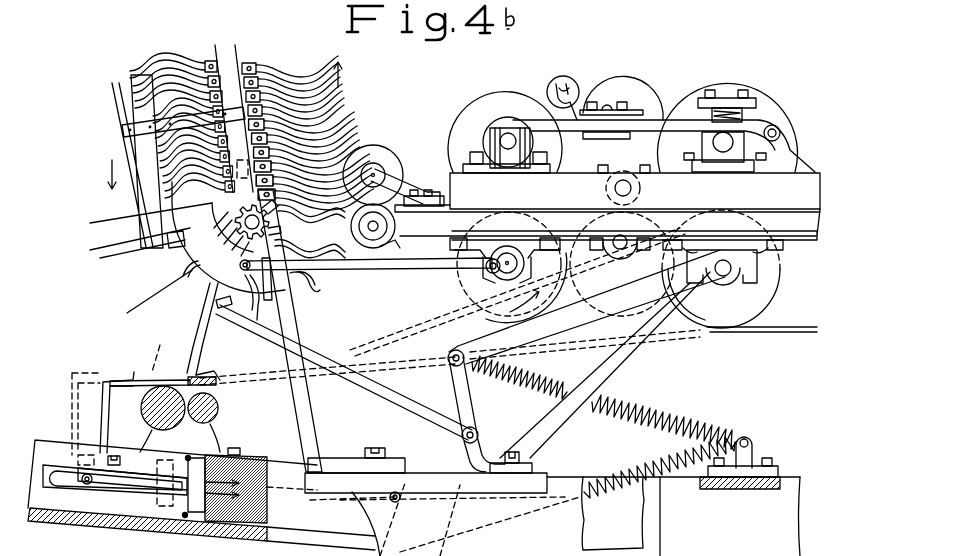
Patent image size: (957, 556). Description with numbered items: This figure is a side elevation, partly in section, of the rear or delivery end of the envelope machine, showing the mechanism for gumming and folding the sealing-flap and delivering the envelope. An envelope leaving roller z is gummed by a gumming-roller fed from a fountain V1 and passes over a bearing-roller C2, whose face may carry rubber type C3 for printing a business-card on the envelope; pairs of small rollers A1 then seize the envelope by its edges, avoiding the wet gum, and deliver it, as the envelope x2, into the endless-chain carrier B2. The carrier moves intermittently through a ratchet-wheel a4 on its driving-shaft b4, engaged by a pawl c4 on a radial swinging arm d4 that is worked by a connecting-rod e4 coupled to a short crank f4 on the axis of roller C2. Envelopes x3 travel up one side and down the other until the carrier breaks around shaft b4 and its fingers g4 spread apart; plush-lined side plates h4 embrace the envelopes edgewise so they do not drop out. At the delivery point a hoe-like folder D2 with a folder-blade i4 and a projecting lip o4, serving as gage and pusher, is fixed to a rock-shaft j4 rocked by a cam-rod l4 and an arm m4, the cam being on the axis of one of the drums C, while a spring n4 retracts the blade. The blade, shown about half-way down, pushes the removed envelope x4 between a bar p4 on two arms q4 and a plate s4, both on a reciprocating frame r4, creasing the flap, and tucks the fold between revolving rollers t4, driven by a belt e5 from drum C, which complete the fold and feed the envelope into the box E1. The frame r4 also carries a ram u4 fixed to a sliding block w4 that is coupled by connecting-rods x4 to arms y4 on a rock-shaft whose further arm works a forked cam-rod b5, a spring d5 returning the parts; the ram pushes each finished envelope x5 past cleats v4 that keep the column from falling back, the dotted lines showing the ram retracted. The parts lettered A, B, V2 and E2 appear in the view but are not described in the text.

The endless-chain carrier B2 is at (252, 118).
The fingers g4 is at (251, 172).
The frame A is at (607, 201).
The wheel V2 is at (530, 92).
The gum fountain V1 is at (605, 92).
The roller z is at (777, 126).
The bearing-roller C2 is at (511, 267).
The short crank f4 is at (512, 256).
The rubber type C3 is at (622, 243).
The drum C is at (721, 269).
The rail B is at (762, 321).
The small rollers A1 is at (393, 171).
The envelope x2 is at (369, 224).
The connecting-rod e4 is at (369, 266).
The side plates h4 is at (239, 269).
The radial swinging arm d4 is at (228, 237).
The ratchet-wheel a4 is at (234, 222).
The driving-shaft b4 is at (272, 213).
The pawl c4 is at (282, 226).
The folder-blade i4 is at (202, 329).
The projecting lip o4 is at (215, 304).
The envelope removed from carrier x4 is at (196, 330).
The envelopes in carrier x3 is at (159, 291).
The hoe-like folder D2 is at (344, 372).
The rock-shaft j4 is at (481, 429).
The arm m4 is at (476, 411).
The cam-rod l4 is at (587, 307).
The forked cam-rod b5 is at (600, 372).
The spring n4 is at (664, 417).
The spring d5 is at (633, 478).
The box E1 is at (691, 516).
The belt e5 is at (395, 338).
The base plate E2 is at (201, 529).
The sliding block w4 is at (115, 481).
The completed envelopes x5 is at (248, 458).
The ram u4 is at (217, 488).
The cleats v4 is at (189, 491).
The reciprocating frame r4 is at (106, 402).
The arms q4 is at (230, 386).
The plate s4 is at (197, 379).
The bar p4 is at (206, 377).
The revolving rollers t4 is at (148, 410).
The arms y4 is at (364, 524).